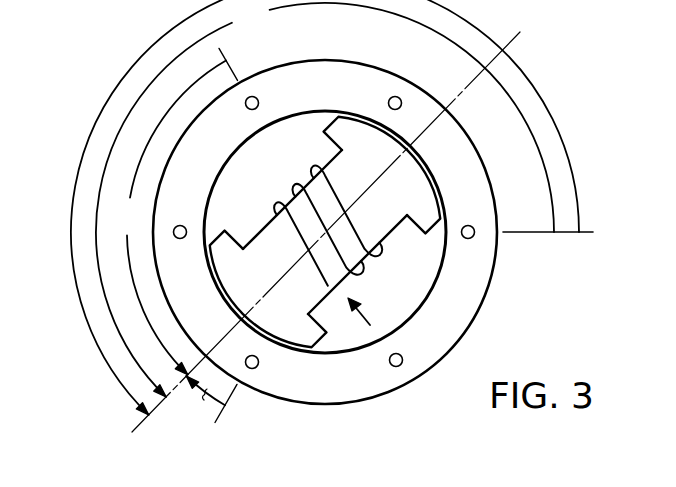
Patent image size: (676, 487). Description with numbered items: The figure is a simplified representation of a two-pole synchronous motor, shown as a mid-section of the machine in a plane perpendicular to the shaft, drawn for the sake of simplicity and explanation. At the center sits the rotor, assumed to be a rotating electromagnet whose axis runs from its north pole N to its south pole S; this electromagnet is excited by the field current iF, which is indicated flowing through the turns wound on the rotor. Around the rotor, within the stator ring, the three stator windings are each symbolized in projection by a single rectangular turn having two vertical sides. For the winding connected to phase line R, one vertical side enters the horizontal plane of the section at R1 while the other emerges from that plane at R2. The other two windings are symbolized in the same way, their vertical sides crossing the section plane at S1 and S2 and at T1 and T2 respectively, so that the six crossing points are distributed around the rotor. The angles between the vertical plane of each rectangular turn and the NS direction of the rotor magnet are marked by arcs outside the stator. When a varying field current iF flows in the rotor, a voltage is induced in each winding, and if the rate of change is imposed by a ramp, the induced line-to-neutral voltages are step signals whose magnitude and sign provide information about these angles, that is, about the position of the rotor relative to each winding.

The winding S side S1 is at (267, 95).
The winding S side S2 is at (383, 370).
The winding T side T1 is at (267, 371).
The winding T side T2 is at (381, 95).
The winding R side R1 is at (467, 251).
The winding R side R2 is at (181, 214).
The rotor north pole N is at (259, 298).
The rotor south pole S is at (391, 166).
The field current iF is at (373, 319).